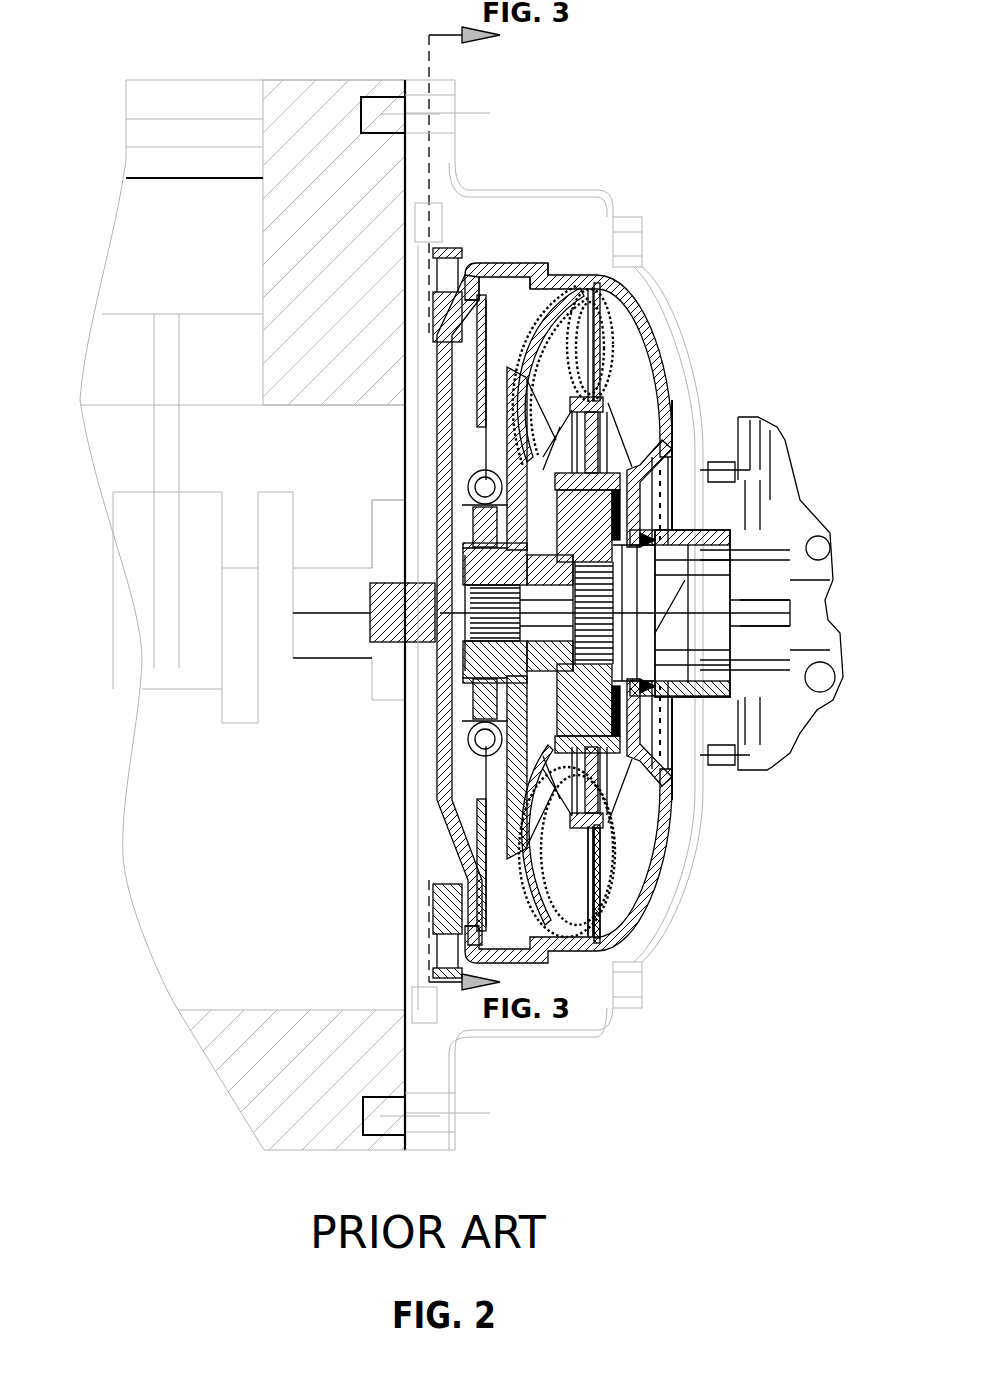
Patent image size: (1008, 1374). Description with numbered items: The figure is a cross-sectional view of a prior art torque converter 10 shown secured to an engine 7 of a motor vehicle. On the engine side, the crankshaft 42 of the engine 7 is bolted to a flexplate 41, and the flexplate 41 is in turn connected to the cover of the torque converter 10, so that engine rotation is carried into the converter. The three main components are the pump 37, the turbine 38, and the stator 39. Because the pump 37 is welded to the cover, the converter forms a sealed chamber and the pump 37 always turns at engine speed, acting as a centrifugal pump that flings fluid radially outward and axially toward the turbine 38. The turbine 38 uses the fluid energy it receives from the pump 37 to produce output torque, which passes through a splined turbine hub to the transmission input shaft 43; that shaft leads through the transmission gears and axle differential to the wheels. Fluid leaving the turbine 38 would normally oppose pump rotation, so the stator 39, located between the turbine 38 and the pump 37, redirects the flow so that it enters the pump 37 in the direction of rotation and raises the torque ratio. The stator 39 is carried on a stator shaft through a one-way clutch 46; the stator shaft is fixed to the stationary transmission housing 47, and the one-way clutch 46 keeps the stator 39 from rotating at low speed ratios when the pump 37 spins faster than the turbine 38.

The engine 7 is at (412, 1043).
The torque converter 10 is at (662, 322).
The pump 37 is at (658, 905).
The turbine 38 is at (520, 905).
The stator 39 is at (560, 793).
The flexplate 41 is at (428, 756).
The crankshaft 42 is at (352, 668).
The transmission input shaft 43 is at (768, 633).
The one-way clutch 46 is at (628, 728).
The transmission housing 47 is at (768, 553).